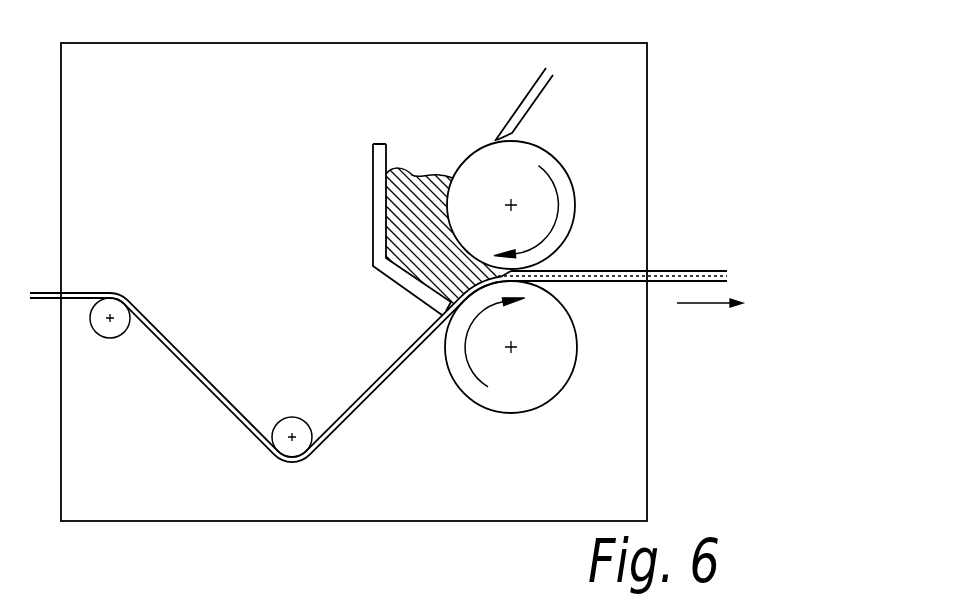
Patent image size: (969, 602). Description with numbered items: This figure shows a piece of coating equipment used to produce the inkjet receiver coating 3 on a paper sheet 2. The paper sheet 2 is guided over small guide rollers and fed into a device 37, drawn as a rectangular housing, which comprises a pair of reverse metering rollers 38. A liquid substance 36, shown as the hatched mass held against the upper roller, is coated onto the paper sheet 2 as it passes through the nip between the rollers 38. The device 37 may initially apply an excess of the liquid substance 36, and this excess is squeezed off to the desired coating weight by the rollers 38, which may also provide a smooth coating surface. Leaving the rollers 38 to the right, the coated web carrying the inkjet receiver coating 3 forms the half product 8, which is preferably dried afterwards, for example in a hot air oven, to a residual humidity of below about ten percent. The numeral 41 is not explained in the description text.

The device 37 is at (660, 117).
The reverse metering rollers 38 is at (548, 167).
The liquid substance 36 is at (406, 213).
The paper sheet 2 is at (381, 381).
The inkjet receiver coating 3 is at (671, 270).
The half product 8 is at (663, 236).
The coating line 41 is at (190, 594).